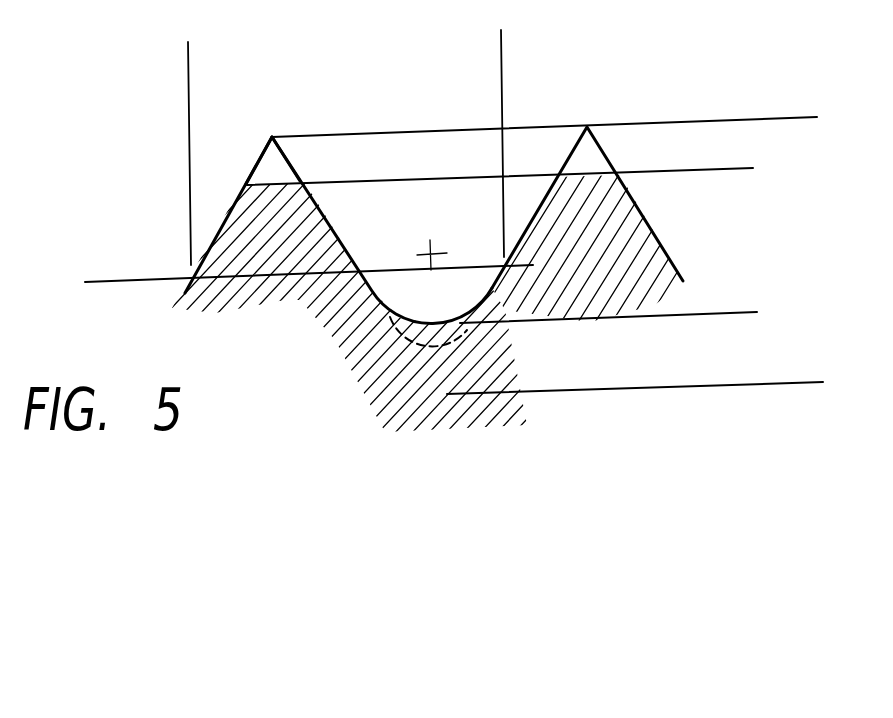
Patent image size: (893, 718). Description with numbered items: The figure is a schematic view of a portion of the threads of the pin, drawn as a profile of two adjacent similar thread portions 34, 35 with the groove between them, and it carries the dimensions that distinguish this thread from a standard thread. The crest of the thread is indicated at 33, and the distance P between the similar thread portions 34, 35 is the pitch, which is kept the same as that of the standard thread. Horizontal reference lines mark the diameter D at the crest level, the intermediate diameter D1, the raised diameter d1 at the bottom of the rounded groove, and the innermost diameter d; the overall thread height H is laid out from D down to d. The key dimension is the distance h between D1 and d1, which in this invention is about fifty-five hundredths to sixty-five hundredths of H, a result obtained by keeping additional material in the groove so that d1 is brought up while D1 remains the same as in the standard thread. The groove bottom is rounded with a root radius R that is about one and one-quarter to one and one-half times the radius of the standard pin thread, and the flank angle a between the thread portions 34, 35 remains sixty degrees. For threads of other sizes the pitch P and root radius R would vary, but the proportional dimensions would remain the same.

The thread crest 33 is at (270, 133).
The thread portion 34 is at (280, 313).
The thread portion 35 is at (569, 271).
The distance between thread portions P is at (501, 50).
The diameter D is at (587, 127).
The diameter D1 is at (594, 172).
The diameter d1 is at (478, 303).
The diameter d is at (378, 300).
The distance h is at (733, 173).
The thread height H is at (798, 118).
The root radius R is at (432, 253).
The thread angle a is at (678, 277).